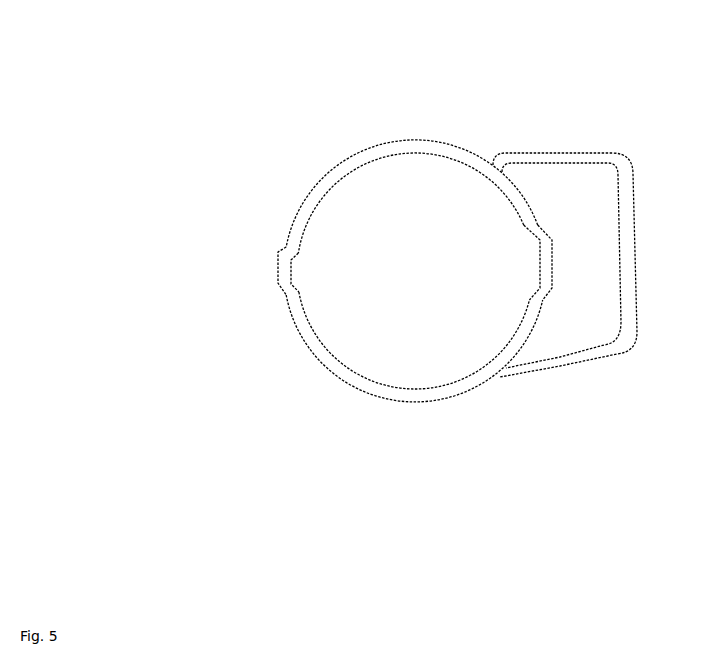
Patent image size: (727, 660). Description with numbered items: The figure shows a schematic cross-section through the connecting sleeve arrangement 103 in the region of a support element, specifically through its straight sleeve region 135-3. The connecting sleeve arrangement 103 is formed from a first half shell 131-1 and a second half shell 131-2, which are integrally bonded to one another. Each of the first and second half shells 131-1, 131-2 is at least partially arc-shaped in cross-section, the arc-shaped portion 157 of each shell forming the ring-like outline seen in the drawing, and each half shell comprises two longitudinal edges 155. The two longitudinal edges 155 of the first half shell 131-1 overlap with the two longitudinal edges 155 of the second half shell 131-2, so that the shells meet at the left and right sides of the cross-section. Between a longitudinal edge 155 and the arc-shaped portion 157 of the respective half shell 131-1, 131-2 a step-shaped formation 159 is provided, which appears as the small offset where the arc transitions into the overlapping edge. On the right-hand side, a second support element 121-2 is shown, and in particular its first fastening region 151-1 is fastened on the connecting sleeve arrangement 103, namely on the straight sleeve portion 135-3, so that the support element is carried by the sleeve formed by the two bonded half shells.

The connecting sleeve arrangement 103 is at (176, 97).
The straight sleeve region 135-3 is at (389, 237).
The first half shell 131-1 is at (428, 145).
The second half shell 131-2 is at (385, 395).
The arc-shaped portion 157 is at (337, 178).
The longitudinal edges 155 is at (297, 265).
The step-shaped formation 159 is at (293, 242).
The second support element 121-2 is at (631, 267).
The first fastening region 151-1 is at (593, 265).